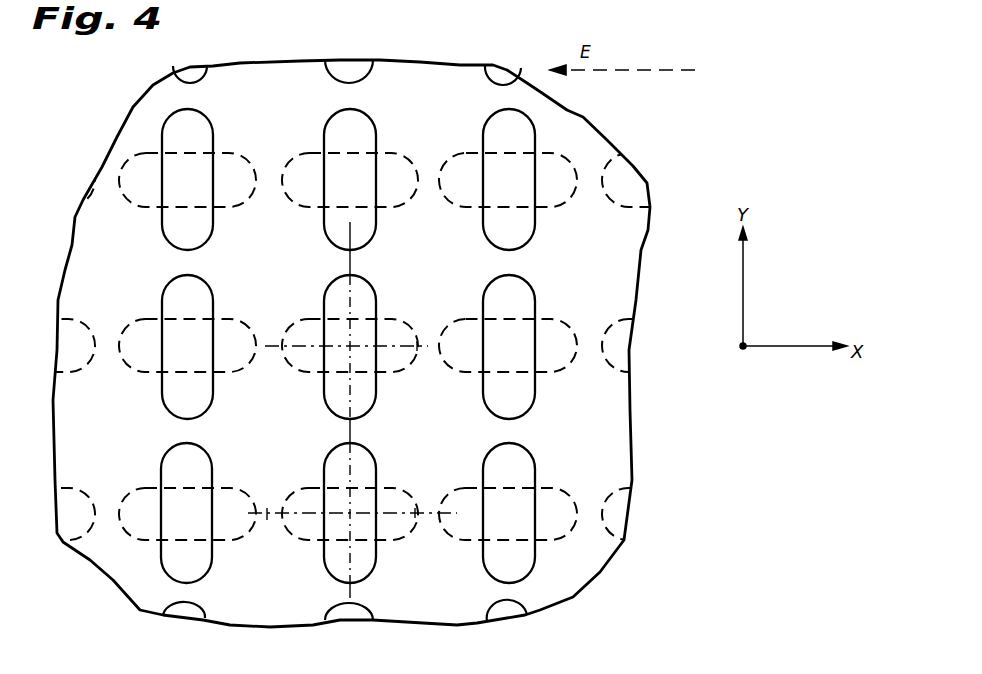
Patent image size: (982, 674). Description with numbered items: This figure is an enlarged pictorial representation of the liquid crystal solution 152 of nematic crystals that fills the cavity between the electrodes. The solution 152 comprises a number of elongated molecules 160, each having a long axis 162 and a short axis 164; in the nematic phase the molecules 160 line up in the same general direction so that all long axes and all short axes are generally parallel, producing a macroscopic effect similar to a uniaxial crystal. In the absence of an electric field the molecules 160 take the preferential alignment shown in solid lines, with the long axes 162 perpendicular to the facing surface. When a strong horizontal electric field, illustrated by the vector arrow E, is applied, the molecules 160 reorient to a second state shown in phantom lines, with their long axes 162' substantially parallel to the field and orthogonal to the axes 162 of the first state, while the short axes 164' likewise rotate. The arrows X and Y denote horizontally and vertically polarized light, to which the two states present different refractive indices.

The liquid crystal solution 152 is at (610, 408).
The elongated molecules 160 is at (326, 118).
The long axis 162 is at (391, 332).
The short axis 164 is at (365, 376).
The long axis in second state 162' is at (352, 541).
The offset vertical center line 164' is at (397, 513).